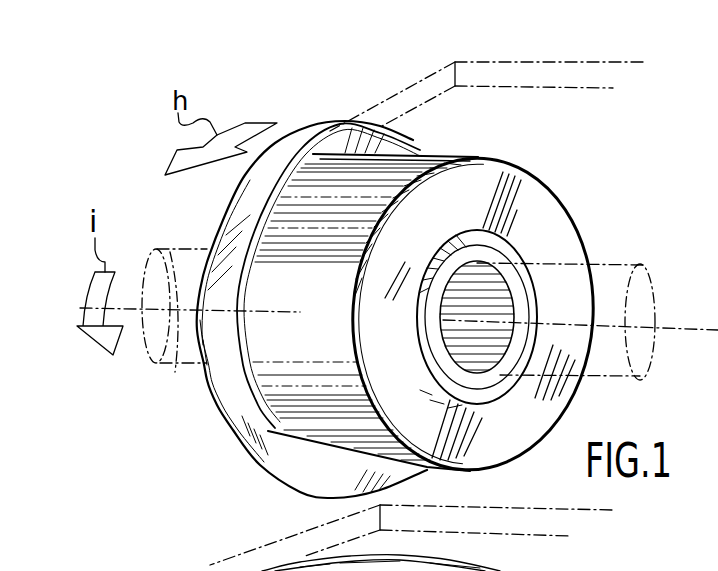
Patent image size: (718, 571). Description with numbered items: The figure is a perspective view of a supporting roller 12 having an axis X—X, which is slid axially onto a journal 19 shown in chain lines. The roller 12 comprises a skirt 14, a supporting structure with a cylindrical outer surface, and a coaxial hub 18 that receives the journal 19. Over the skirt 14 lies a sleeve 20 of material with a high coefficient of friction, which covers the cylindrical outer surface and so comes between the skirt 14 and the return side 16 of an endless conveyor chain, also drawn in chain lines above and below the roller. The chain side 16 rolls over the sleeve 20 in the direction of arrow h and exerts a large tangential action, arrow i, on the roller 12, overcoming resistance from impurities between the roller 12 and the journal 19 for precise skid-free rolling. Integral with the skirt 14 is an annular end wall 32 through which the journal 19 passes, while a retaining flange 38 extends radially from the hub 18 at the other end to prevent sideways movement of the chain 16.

The supporting roller 12 is at (571, 183).
The skirt 14 is at (555, 235).
The return side of endless chain 16 is at (420, 112).
The hub 18 is at (485, 378).
The journal 19 is at (663, 258).
The sleeve 20 is at (250, 380).
The end wall 32 is at (547, 413).
The retaining flange 38 is at (277, 458).